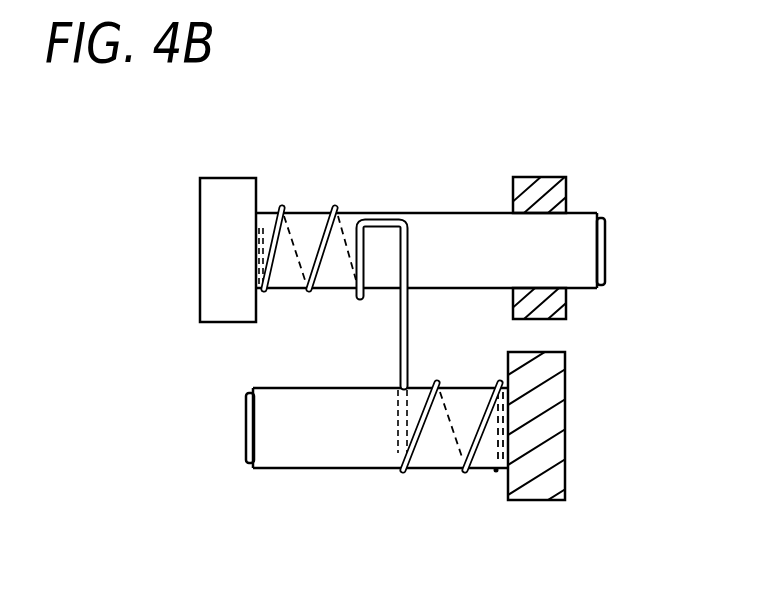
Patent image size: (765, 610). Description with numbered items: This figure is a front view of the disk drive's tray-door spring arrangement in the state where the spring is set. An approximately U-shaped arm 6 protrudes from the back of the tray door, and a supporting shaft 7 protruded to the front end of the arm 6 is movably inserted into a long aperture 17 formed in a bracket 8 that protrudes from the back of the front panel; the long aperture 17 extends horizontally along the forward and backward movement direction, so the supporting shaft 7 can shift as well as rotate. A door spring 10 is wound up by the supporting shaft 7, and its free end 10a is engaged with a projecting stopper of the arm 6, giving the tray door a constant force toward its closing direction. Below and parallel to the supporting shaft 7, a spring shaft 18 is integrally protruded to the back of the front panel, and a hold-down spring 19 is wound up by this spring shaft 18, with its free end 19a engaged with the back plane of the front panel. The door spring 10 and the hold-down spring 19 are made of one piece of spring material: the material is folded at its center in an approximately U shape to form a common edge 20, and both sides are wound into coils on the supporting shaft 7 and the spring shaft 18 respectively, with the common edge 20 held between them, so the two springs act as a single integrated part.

The arm 6 is at (232, 185).
The supporting shaft 7 is at (557, 252).
The bracket 8 is at (548, 182).
The door spring 10 is at (336, 211).
The free end 10a is at (262, 234).
The long aperture 17 is at (540, 288).
The spring shaft 18 is at (272, 423).
The hold-down spring 19 is at (462, 470).
The free end 19a is at (496, 472).
The common edge 20 is at (383, 222).